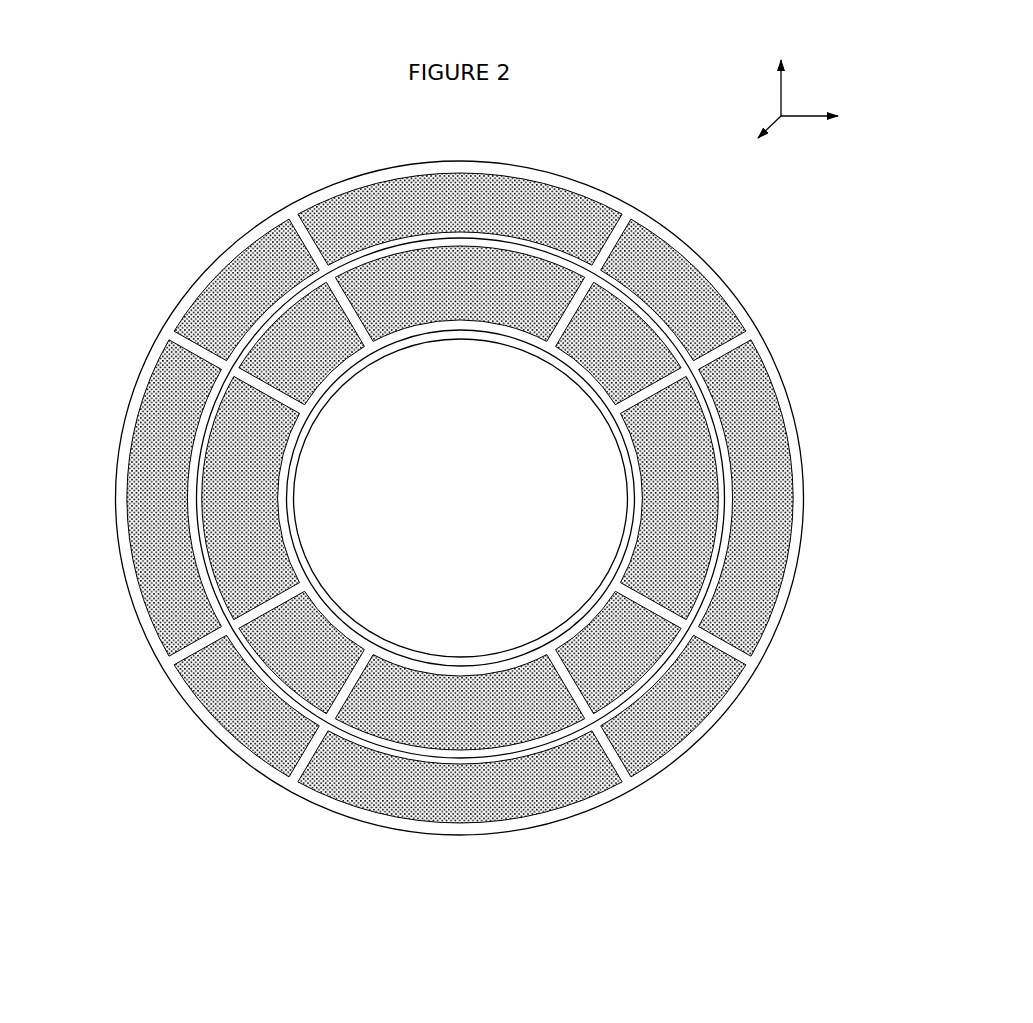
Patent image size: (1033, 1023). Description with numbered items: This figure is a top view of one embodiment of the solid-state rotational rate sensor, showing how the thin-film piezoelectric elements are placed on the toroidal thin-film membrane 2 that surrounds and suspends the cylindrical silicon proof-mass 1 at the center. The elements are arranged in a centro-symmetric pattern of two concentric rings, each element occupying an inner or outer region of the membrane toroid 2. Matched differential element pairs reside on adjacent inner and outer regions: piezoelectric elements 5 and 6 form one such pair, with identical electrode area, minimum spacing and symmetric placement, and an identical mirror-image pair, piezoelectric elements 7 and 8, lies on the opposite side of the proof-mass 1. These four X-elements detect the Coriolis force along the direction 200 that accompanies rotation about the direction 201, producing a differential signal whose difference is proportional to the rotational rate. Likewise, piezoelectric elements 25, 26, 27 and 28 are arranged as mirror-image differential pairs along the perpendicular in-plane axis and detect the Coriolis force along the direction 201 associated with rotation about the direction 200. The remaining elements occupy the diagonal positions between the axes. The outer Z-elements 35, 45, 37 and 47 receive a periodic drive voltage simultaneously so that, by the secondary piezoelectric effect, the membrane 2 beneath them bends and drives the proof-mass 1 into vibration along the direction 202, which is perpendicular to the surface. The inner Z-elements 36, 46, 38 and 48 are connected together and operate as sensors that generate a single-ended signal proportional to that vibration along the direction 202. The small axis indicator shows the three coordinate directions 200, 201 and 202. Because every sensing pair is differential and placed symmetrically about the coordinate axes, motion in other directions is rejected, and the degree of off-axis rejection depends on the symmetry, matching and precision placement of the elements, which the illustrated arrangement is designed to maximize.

The proof-mass 1 is at (470, 467).
The toroidal thin-film membrane 2 is at (98, 487).
The piezoelectric element 5 is at (757, 422).
The piezoelectric element 6 is at (640, 531).
The piezoelectric element 7 is at (145, 578).
The piezoelectric element 8 is at (255, 470).
The piezoelectric element 25 is at (518, 182).
The piezoelectric element 26 is at (392, 303).
The piezoelectric element 27 is at (558, 792).
The piezoelectric element 28 is at (415, 675).
The piezoelectric element 35 is at (698, 305).
The piezoelectric element 36 is at (607, 372).
The piezoelectric element 37 is at (247, 742).
The piezoelectric element 38 is at (295, 615).
The piezoelectric element 45 is at (192, 305).
The piezoelectric element 46 is at (293, 370).
The piezoelectric element 47 is at (705, 675).
The piezoelectric element 48 is at (608, 615).
The direction 200 is at (834, 119).
The direction 201 is at (805, 78).
The direction 202 is at (753, 141).